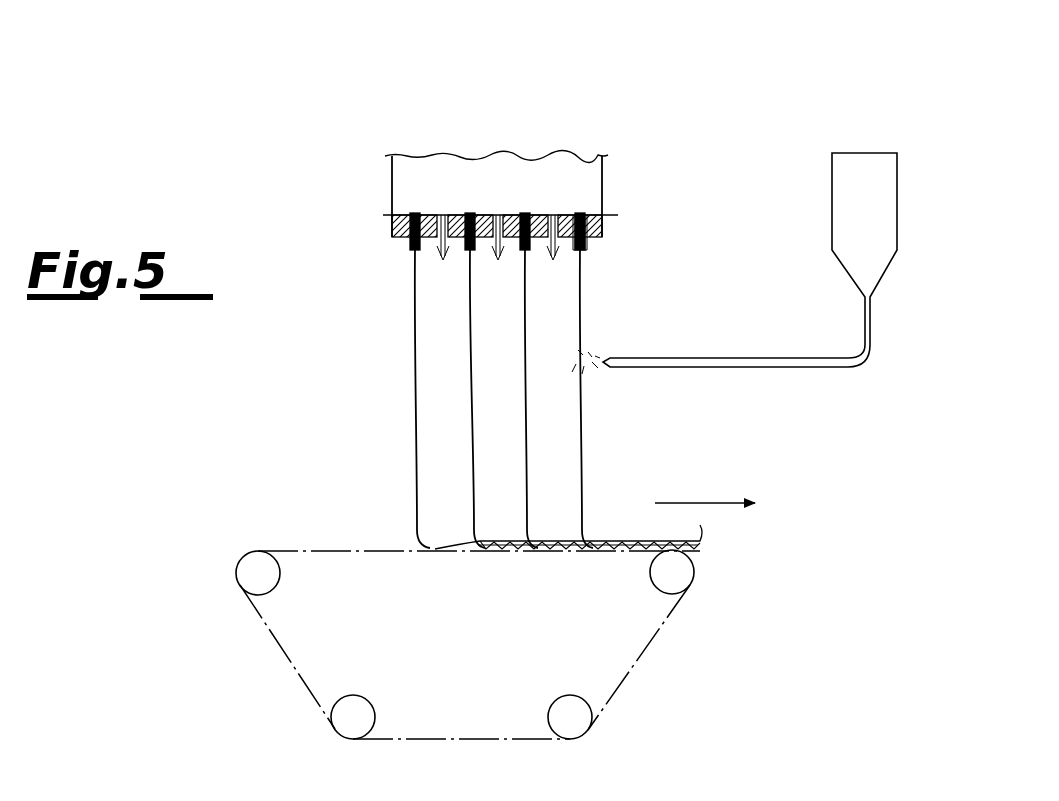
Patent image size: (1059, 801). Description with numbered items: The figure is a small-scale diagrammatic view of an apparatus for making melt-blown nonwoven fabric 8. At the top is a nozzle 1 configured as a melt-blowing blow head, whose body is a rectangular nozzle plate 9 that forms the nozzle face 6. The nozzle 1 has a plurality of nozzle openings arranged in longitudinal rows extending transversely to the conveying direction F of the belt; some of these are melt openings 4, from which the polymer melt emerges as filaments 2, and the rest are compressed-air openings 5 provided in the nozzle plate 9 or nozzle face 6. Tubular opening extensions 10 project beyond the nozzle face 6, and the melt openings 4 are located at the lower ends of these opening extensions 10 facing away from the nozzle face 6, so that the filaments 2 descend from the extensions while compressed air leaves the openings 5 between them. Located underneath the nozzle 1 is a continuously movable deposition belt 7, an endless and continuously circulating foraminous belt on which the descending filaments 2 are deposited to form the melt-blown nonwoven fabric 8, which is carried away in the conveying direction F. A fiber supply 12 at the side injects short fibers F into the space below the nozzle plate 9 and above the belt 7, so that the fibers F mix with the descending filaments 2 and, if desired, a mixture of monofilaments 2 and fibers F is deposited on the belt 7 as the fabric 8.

The nozzle 1 is at (600, 125).
The filaments 2 is at (468, 358).
The melt openings 4 is at (586, 257).
The compressed-air openings 5 is at (507, 252).
The nozzle face 6 is at (398, 240).
The deposition belt 7 is at (300, 550).
The melt-blown nonwoven fabric 8 is at (612, 538).
The nozzle plate 9 is at (497, 226).
The opening extensions 10 is at (584, 242).
The fiber supply 12 is at (838, 165).
The short fibers / conveying direction F is at (575, 352).